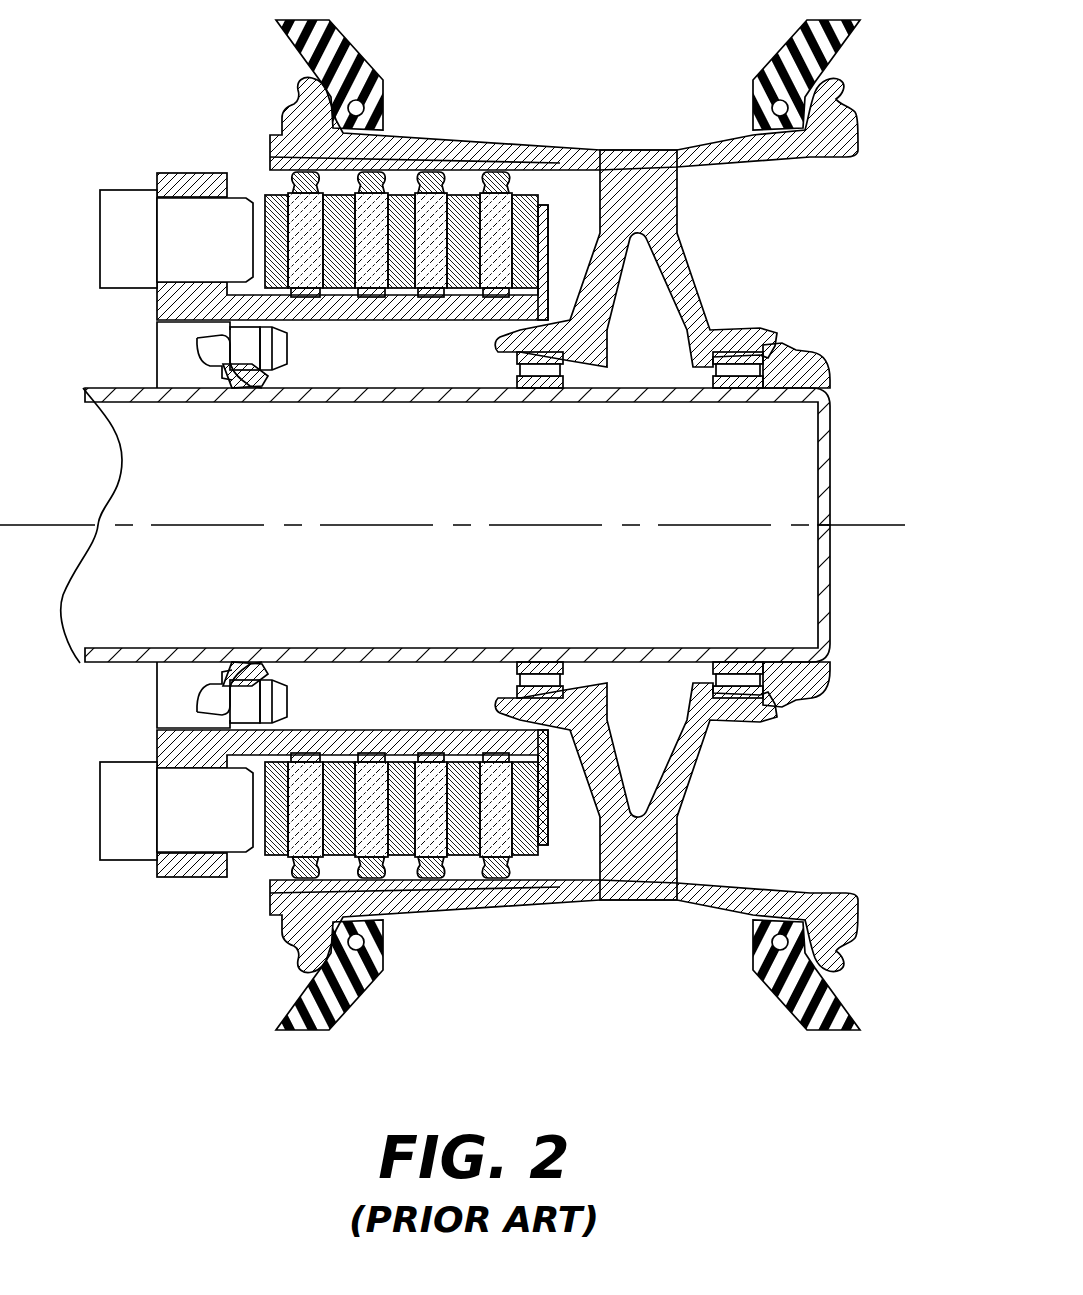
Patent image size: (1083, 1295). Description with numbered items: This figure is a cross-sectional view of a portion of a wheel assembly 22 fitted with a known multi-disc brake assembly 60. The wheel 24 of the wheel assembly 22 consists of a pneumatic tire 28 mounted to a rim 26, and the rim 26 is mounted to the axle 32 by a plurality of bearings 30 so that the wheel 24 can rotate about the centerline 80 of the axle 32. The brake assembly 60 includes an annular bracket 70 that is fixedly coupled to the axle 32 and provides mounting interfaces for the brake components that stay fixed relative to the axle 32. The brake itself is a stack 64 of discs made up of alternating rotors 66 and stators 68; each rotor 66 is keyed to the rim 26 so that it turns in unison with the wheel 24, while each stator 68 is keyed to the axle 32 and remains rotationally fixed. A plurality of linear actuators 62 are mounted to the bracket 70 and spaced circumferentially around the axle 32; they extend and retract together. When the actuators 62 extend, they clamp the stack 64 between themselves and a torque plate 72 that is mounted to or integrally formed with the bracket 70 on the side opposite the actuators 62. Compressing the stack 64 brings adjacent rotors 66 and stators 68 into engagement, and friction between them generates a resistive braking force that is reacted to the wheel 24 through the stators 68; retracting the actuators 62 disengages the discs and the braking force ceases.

The wheel assembly 22 is at (601, 525).
The wheel 24 is at (782, 162).
The rim 26 is at (700, 290).
The pneumatic tire 28 is at (860, 50).
The bearings 30 is at (518, 368).
The axle 32 is at (98, 665).
The brake assembly 60 is at (319, 538).
The actuators 62 is at (183, 220).
The stack 64 is at (375, 488).
The rotors 66 is at (497, 205).
The stators 68 is at (275, 197).
The bracket 70 is at (157, 305).
The torque plate 72 is at (548, 247).
The centerline 80 is at (860, 525).